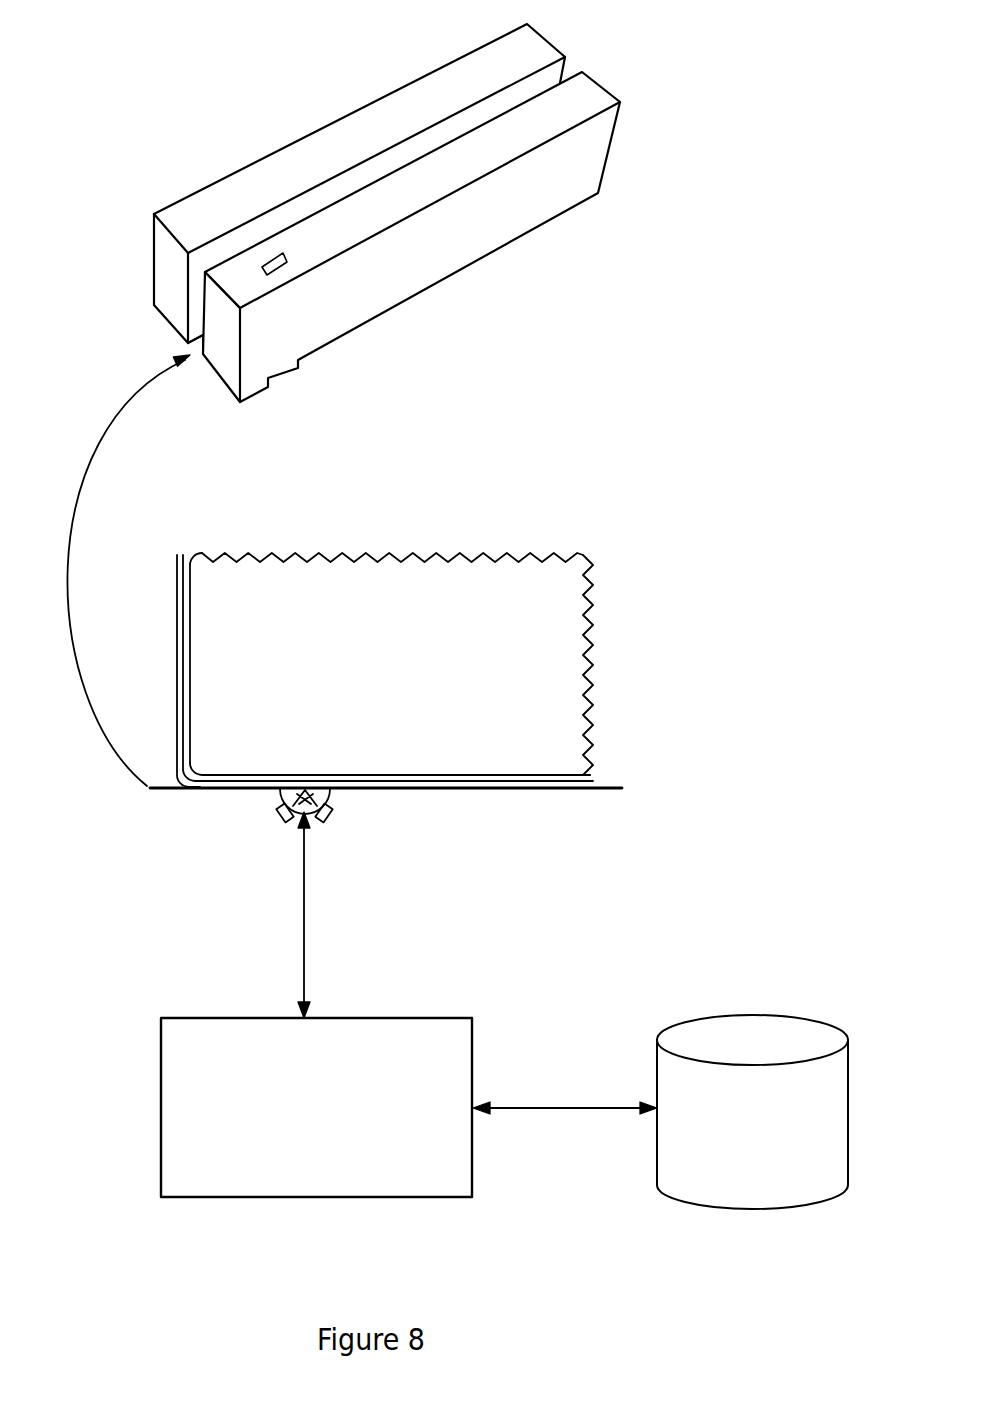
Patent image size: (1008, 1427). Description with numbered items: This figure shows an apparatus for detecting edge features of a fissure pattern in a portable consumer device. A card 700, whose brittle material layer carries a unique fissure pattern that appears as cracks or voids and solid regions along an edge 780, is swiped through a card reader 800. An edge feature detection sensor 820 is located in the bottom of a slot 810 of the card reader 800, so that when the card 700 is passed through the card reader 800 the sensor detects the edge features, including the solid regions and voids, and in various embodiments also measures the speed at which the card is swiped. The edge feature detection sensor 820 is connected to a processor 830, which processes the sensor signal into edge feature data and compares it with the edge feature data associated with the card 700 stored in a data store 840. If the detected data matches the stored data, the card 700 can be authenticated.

The card 700 is at (588, 622).
The edge 780 is at (597, 783).
The card reader 800 is at (310, 140).
The slot 810 is at (183, 343).
The edge feature detection sensor 820 is at (280, 792).
The processor 830 is at (316, 1107).
The data store 840 is at (752, 1112).